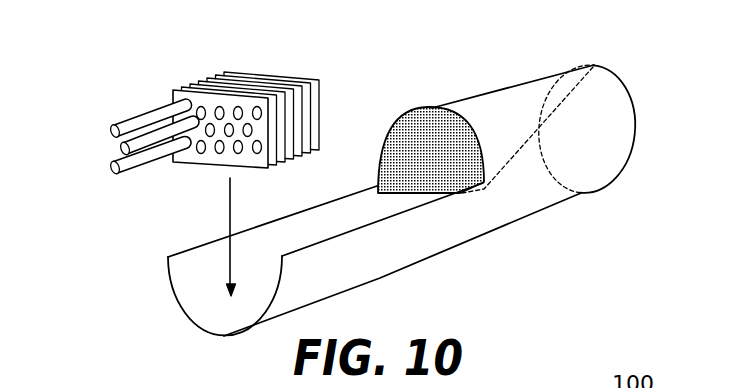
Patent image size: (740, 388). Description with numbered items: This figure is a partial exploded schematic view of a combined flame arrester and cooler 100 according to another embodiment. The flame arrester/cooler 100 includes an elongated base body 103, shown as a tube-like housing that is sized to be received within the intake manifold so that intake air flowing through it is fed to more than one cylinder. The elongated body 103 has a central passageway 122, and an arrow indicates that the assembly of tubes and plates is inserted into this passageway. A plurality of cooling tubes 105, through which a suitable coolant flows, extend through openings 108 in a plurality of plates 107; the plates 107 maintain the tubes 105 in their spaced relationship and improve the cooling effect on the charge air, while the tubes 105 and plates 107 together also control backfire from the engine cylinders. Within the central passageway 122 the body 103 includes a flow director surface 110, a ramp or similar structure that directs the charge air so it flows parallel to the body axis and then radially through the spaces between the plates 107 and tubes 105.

The flame arrester/cooler 100 is at (592, 32).
The elongated base body 103 is at (543, 208).
The cooling tubes 105 is at (119, 153).
The plates 107 is at (320, 82).
The openings 108 is at (262, 149).
The flow director surface 110 is at (573, 95).
The central passageway 122 is at (210, 328).